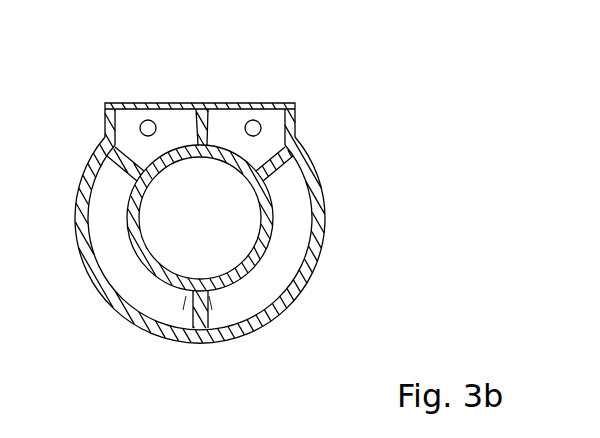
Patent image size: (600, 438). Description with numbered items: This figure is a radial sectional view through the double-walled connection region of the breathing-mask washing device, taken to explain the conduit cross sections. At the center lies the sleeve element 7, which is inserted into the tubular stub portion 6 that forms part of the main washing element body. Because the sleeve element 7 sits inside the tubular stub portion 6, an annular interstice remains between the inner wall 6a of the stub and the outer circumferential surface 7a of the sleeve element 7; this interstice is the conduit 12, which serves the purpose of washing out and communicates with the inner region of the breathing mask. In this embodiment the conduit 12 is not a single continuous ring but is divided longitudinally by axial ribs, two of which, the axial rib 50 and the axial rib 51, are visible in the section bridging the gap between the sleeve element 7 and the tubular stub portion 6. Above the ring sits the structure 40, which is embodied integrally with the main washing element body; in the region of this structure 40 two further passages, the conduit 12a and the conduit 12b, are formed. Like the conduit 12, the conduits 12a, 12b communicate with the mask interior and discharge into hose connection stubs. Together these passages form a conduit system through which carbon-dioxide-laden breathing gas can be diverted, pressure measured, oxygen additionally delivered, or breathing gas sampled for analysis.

The structure 40 is at (185, 103).
The conduit 12a is at (158, 154).
The conduit 12b is at (275, 154).
The axial rib 50 is at (120, 172).
The tubular stub portion 6 is at (123, 308).
The inner wall 6a is at (91, 240).
The sleeve element 7 is at (143, 250).
The outer circumferential surface 7a is at (127, 240).
The axial rib 51 is at (199, 293).
The conduit 12 is at (183, 310).